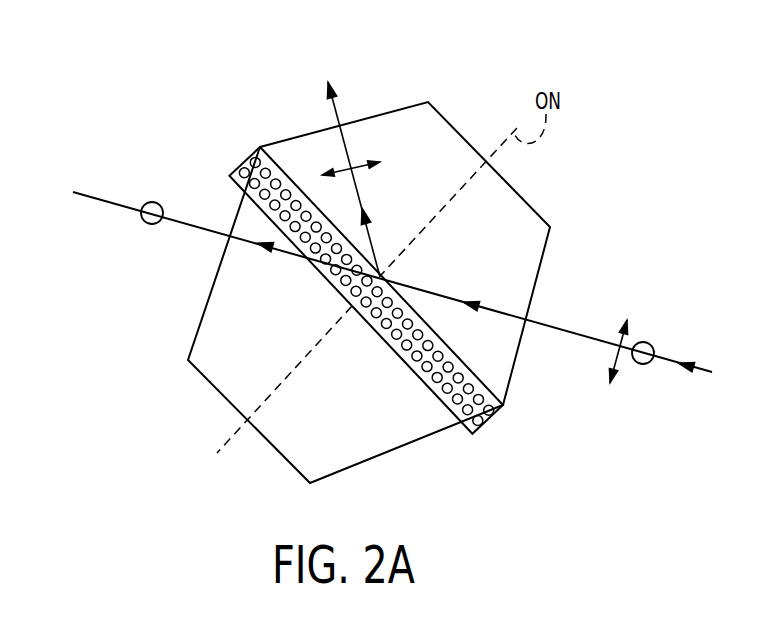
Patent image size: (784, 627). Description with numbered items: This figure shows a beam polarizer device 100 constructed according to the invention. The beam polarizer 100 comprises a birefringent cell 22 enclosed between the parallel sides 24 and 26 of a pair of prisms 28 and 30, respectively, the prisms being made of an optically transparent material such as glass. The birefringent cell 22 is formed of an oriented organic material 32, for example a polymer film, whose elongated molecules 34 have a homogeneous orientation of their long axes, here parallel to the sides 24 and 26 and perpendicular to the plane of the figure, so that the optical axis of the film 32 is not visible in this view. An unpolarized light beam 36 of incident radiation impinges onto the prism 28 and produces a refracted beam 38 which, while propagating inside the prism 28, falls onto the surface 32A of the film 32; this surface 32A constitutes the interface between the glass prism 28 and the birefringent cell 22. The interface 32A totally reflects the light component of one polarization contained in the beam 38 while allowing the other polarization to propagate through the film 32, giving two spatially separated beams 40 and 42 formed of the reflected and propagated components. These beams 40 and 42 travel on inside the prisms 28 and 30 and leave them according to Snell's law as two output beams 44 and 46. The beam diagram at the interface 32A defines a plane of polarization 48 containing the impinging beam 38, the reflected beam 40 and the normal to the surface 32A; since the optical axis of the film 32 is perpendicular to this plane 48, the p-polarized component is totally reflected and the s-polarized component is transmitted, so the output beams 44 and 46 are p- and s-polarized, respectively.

The beam polarizer device 100 is at (101, 86).
The birefringent cell 22 is at (292, 168).
The side of prism 24 is at (458, 362).
The side of prism 26 is at (410, 385).
The prism 28 is at (430, 108).
The prism 30 is at (310, 455).
The oriented organic material 32 is at (244, 166).
The surface of film 32A is at (440, 308).
The elongated molecules 34 is at (262, 187).
The unpolarized light beam 36 is at (590, 333).
The refracted beam 38 is at (410, 278).
The reflected beam 40 is at (357, 187).
The propagated beam 42 is at (282, 254).
The output beam 44 is at (340, 106).
The output beam 46 is at (108, 203).
The plane of polarization 48 is at (469, 235).